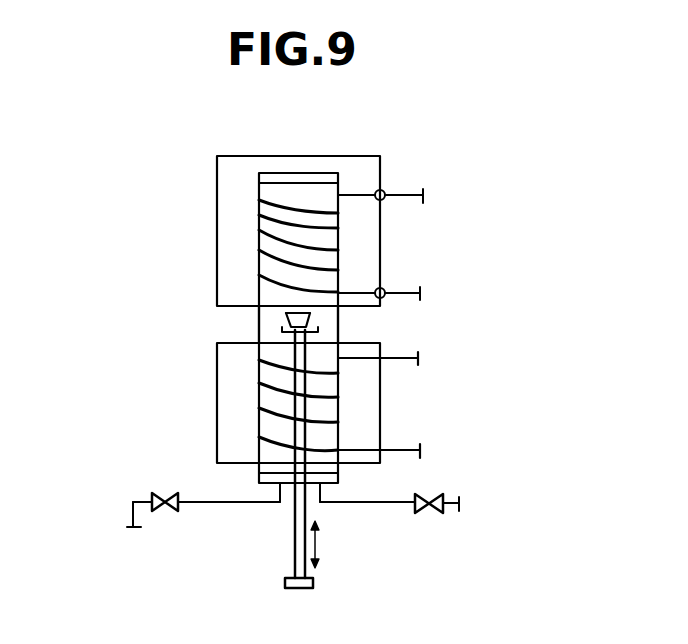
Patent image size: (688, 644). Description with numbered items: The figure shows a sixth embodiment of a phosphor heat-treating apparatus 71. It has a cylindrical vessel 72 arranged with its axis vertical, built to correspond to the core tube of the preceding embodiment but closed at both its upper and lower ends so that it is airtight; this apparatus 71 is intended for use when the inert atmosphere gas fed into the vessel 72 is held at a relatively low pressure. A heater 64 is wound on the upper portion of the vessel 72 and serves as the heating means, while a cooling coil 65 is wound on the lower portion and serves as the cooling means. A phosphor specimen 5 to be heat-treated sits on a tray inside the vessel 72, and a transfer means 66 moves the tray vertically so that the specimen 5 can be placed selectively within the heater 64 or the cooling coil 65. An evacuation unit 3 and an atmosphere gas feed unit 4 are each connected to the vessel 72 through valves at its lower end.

The phosphor heat-treating apparatus 71 is at (177, 210).
The vessel 72 is at (259, 322).
The heater 64 is at (323, 218).
The cooling coil 65 is at (323, 414).
The phosphor specimen 5 is at (310, 323).
The transfer means 66 is at (290, 566).
The evacuation unit 3 is at (170, 493).
The atmosphere gas feed unit 4 is at (433, 493).